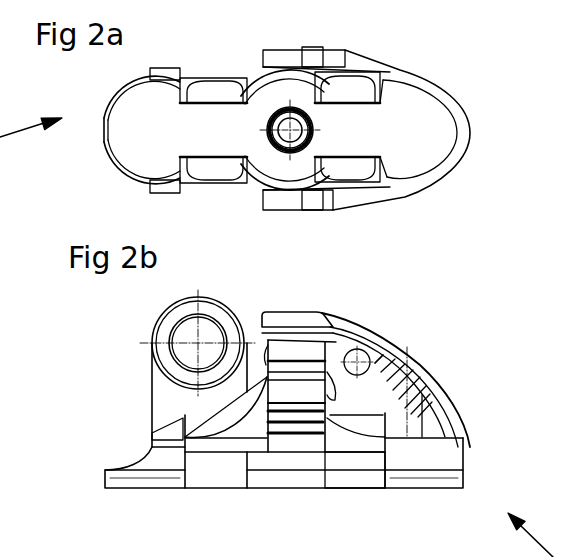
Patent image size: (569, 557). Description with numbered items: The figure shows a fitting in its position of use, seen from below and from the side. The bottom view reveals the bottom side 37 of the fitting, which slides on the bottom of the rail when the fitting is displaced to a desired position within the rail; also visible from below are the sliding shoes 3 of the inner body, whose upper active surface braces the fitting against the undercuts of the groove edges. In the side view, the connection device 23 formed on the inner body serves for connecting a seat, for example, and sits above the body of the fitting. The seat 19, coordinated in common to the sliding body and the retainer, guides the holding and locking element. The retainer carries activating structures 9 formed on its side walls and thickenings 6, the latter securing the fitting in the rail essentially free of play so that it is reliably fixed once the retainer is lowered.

In FIG. 2A, the sliding shoes 3 is at (417, 107).
In FIG. 2B, the sliding shoes 3 is at (418, 490).
In FIG. 2A, the thickenings 6 is at (362, 173).
In FIG. 2B, the thickenings 6 is at (353, 477).
In FIG. 2B, the activating structures 9 is at (298, 420).
In FIG. 2B, the seat 19 is at (317, 352).
In FIG. 2B, the connection device 23 is at (163, 329).
In FIG. 2A, the bottom side 37 is at (261, 106).